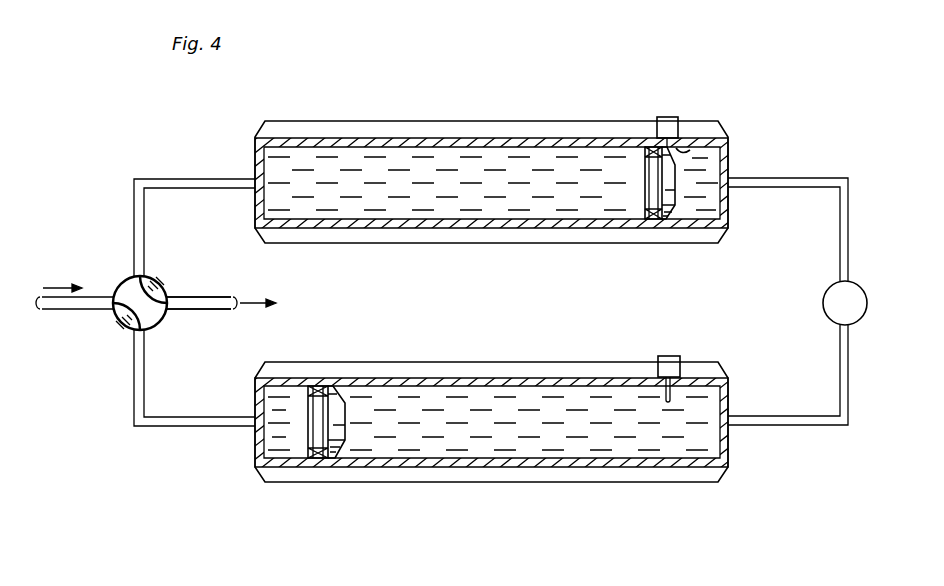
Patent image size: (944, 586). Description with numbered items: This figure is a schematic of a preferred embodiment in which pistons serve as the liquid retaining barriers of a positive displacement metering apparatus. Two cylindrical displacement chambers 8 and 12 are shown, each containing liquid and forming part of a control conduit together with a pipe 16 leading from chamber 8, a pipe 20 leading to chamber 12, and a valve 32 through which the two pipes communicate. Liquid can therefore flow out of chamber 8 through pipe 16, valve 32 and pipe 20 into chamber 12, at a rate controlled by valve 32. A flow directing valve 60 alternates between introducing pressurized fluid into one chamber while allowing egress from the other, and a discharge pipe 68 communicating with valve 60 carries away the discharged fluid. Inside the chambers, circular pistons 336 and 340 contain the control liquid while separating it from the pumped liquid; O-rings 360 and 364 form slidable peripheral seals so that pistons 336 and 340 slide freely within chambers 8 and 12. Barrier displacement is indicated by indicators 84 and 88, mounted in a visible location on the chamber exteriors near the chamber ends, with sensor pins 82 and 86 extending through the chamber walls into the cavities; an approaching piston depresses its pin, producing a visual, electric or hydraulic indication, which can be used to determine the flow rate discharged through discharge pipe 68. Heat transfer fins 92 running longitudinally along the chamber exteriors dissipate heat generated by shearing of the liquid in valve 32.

The cylindrical displacement chamber 8 is at (454, 137).
The cylindrical displacement chamber 12 is at (702, 470).
The pipe 16 is at (851, 222).
The pipe 20 is at (851, 372).
The valve 32 is at (868, 301).
The valve 60 is at (120, 327).
The discharge pipe 68 is at (202, 311).
The sensor pin 82 is at (684, 147).
The indicator 84 is at (667, 117).
The sensor pin 86 is at (682, 393).
The indicator 88 is at (666, 355).
The heat transfer fins 92 is at (358, 124).
The circular piston 336 is at (697, 150).
The circular piston 340 is at (360, 395).
The O-ring 360 is at (655, 147).
The O-ring 364 is at (318, 388).